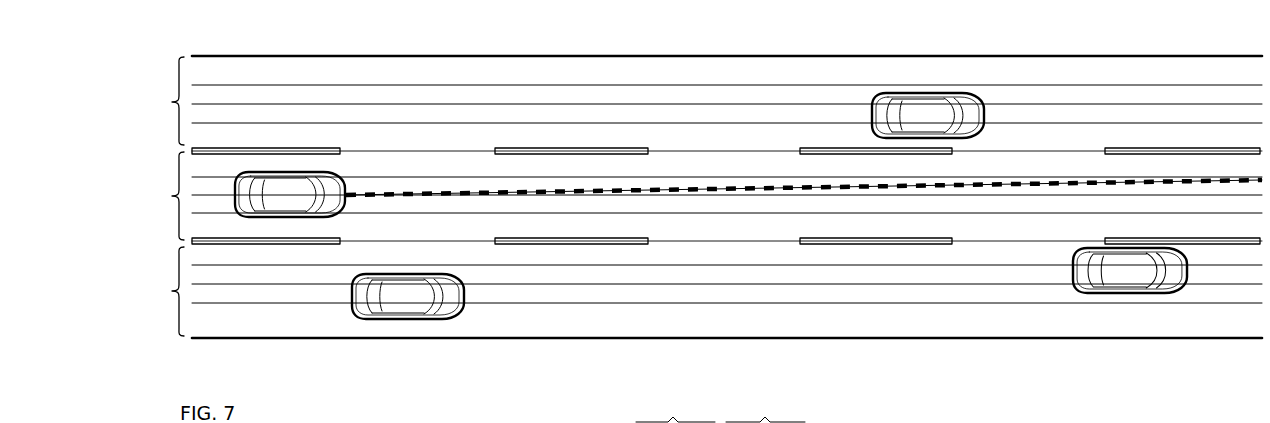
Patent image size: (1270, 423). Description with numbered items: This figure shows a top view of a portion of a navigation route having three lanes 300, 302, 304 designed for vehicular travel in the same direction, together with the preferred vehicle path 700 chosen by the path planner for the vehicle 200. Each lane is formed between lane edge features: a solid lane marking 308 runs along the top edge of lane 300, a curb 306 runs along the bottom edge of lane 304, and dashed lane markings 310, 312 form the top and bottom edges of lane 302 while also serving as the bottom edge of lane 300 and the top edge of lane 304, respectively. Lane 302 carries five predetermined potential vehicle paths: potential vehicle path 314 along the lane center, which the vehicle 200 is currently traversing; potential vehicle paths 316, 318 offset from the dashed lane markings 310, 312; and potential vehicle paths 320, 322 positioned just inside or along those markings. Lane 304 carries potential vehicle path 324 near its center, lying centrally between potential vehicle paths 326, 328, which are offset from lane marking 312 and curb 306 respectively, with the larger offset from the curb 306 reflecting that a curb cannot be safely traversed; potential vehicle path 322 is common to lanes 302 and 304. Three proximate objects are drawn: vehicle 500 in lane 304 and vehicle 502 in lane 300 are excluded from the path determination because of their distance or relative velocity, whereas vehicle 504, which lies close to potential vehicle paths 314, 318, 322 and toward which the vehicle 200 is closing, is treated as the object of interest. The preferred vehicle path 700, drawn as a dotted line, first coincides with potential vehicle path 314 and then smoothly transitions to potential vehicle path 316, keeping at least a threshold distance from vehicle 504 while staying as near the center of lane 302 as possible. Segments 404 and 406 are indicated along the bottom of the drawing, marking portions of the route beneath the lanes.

The vehicle 200 is at (341, 173).
The lane 300 is at (700, 101).
The lane 302 is at (700, 196).
The lane 304 is at (700, 290).
The curb 306 is at (371, 339).
The solid lane marking 308 is at (384, 55).
The dashed lane marking 310 is at (535, 148).
The dashed lane marking 312 is at (535, 238).
The potential vehicle path 314 is at (1063, 196).
The potential vehicle path 316 is at (738, 177).
The potential vehicle path 318 is at (757, 213).
The potential vehicle path 320 is at (693, 150).
The potential vehicle path 322 is at (669, 240).
The potential vehicle path 324 is at (753, 284).
The potential vehicle path 326 is at (697, 265).
The potential vehicle path 328 is at (840, 303).
The road segment 404 is at (675, 408).
The road segment 406 is at (765, 408).
The vehicle 500 is at (466, 279).
The vehicle 502 is at (960, 95).
The vehicle 504 is at (1189, 258).
The preferred vehicle path 700 is at (499, 184).